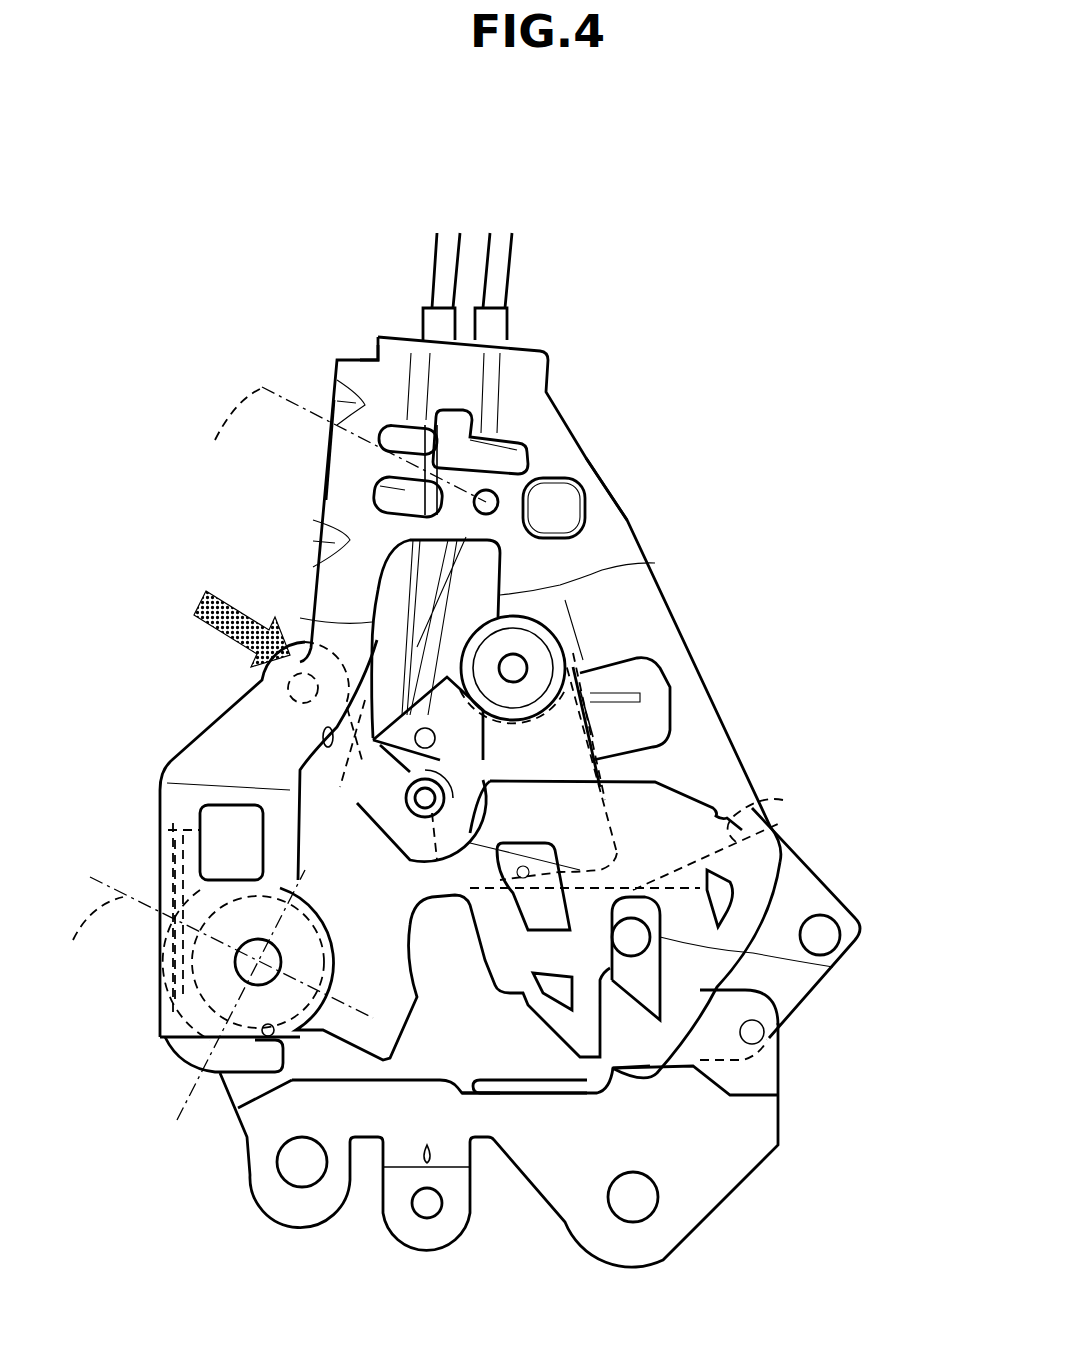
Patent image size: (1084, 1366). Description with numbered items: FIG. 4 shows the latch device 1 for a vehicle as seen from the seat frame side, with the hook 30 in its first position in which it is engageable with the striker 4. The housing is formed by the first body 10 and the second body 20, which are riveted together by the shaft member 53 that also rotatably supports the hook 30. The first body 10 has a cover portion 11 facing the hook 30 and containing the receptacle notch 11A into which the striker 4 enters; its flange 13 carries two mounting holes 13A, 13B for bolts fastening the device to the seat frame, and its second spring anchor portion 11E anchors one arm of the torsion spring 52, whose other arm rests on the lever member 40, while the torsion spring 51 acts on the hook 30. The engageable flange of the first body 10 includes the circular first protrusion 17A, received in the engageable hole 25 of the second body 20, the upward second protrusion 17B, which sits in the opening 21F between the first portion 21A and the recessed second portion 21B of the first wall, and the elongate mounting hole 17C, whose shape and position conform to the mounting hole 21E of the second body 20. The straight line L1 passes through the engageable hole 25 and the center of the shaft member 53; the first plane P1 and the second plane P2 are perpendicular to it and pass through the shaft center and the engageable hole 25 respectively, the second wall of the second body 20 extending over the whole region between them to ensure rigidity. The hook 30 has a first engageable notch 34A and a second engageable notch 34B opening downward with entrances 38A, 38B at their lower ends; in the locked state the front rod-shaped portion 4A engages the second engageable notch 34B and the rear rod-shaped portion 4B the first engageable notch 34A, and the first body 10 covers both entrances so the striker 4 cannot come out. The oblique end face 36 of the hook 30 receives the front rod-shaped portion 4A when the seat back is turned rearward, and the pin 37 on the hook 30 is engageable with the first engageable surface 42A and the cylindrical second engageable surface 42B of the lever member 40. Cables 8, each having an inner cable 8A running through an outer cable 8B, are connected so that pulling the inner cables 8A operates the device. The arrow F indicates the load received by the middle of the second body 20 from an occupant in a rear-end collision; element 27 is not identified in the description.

The latch device for a vehicle 1 is at (766, 348).
The striker 4 is at (812, 866).
The front rod-shaped portion 4A is at (660, 923).
The rear rod-shaped portion 4B is at (835, 937).
The cable 8 is at (490, 265).
The outer cable 8B is at (457, 370).
The inner cable 8A is at (410, 600).
The first body 10 is at (705, 668).
The cover portion 11 is at (703, 765).
The receptacle notch 11A is at (680, 967).
The second spring anchor portion 11E is at (546, 705).
The flange 13 is at (688, 1192).
The mounting hole 13A is at (292, 1188).
The mounting hole 13B is at (635, 1212).
The first protrusion 17A is at (478, 497).
The second protrusion 17B is at (398, 432).
The mounting hole 17C is at (584, 493).
The second body 20 is at (236, 708).
The first portion 21A is at (330, 500).
The second portion 21B is at (498, 355).
The mounting hole 21E is at (586, 518).
The opening 21F is at (371, 360).
The engageable hole 25 is at (494, 494).
The spring end 27 is at (314, 533).
The hook 30 is at (754, 828).
The first engageable notch 34A is at (503, 1040).
The second engageable notch 34B is at (292, 883).
The end face 36 is at (833, 967).
The pin 37 is at (403, 830).
The entrance 38A is at (629, 1038).
The entrance 38B is at (487, 1040).
The lever member 40 is at (597, 747).
The first engageable surface 42A is at (433, 847).
The second engageable surface 42B is at (533, 870).
The torsion spring 51 is at (180, 990).
The torsion spring 52 is at (565, 640).
The shaft member 53 is at (233, 970).
The arrow F is at (231, 624).
The straight line L1 is at (187, 1100).
The first plane P1 is at (214, 947).
The second plane P2 is at (336, 444).